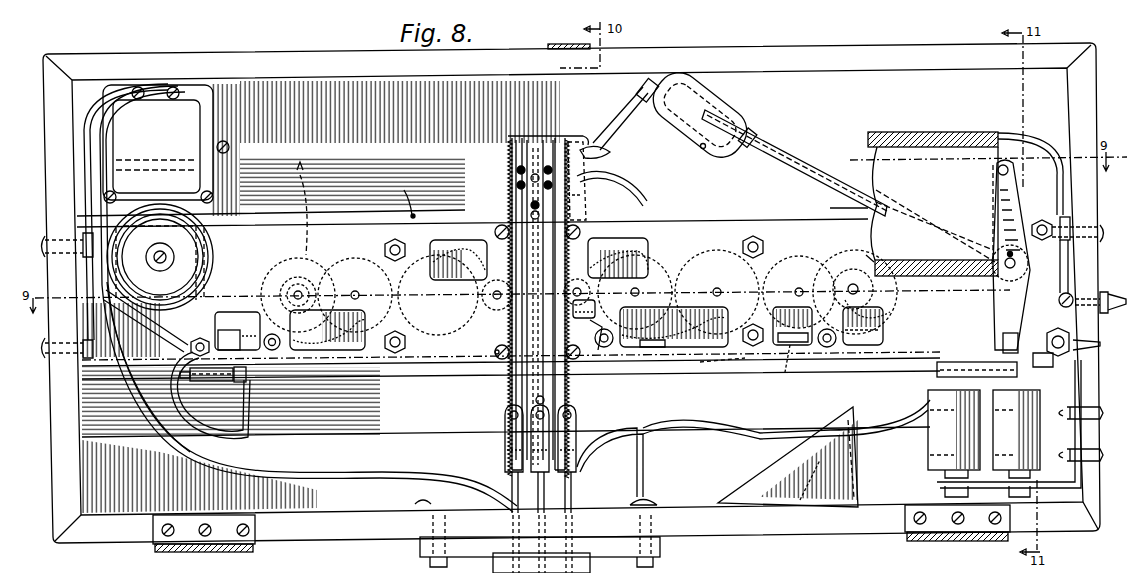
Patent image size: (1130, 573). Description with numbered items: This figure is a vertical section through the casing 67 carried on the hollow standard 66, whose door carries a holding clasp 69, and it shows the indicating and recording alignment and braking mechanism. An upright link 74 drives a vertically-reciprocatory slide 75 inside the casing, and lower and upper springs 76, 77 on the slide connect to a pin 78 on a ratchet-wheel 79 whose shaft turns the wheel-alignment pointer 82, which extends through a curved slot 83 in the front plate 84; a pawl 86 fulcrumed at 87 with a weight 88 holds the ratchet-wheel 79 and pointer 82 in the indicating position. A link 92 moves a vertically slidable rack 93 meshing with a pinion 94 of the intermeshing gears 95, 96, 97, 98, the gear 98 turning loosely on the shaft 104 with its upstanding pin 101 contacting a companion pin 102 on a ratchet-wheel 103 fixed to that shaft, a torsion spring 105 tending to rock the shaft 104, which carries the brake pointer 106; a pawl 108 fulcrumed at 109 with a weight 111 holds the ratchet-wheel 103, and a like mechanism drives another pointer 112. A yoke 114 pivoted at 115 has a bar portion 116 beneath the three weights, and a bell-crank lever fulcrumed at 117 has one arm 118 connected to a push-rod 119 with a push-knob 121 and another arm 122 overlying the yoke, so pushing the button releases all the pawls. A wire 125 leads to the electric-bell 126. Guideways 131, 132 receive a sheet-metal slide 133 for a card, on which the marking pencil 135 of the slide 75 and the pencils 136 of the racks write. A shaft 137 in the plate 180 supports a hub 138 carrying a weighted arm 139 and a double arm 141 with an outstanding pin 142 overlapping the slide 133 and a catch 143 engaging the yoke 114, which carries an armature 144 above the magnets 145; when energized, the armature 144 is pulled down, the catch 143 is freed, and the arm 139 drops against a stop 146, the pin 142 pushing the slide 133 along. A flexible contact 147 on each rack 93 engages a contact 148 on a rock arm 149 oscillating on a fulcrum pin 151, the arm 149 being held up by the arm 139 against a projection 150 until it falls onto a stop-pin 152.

The hollow column or standard 66 is at (592, 564).
The casing 67 is at (1090, 214).
The holding clasp 69 is at (565, 44).
The upright link 74 is at (505, 447).
The vertically-reciprocatory bar or slide 75 is at (532, 385).
The lower spring 76 is at (505, 342).
The upper spring 77 is at (584, 212).
The pin 78 is at (577, 283).
The ratchet-wheel 79 is at (590, 262).
The wheel-alignment pointer or index 82 is at (584, 200).
The curved slot 83 is at (648, 198).
The plate or sheet 84 is at (415, 190).
The pawl 86 is at (596, 365).
The fulcrum 87 is at (612, 350).
The weight 88 is at (790, 345).
The link 92 is at (498, 458).
The vertically slidable rack 93 is at (547, 160).
The pinion 94 is at (360, 301).
The gear 95 is at (452, 240).
The gear 96 is at (363, 250).
The gear 97 is at (792, 262).
The gear 98 is at (306, 278).
The upstanding pin 101 is at (353, 288).
The companion pin 102 is at (330, 290).
The ratchet-wheel 103 is at (262, 260).
The shaft 104 is at (845, 285).
The torsion spring 105 is at (884, 333).
The pointer 106 is at (835, 208).
The pawl 108 is at (848, 345).
The fulcrum 109 is at (827, 350).
The weight 111 is at (788, 360).
The pointer 112 is at (310, 240).
The yoke 114 is at (977, 372).
The pivot 115 is at (250, 430).
The bar portion 116 is at (732, 372).
The fulcrum 117 is at (1062, 378).
The arm 118 is at (1113, 309).
The push-rod 119 is at (1070, 296).
The push-knob or button 121 is at (1104, 292).
The arm 122 is at (1011, 280).
The wire 125 is at (360, 474).
The electric-bell 126 is at (160, 250).
The horizontal guideway 131 is at (952, 132).
The horizontal guideway 132 is at (930, 276).
The sheet-metal slide 133 is at (934, 203).
The marking pencil 135 is at (517, 200).
The pencil 136 is at (527, 160).
The shaft 137 is at (1005, 300).
The hub 138 is at (1000, 240).
The weighted arm 139 is at (812, 177).
The double arm 141 is at (992, 216).
The outstanding pin 142 is at (996, 170).
The catch 143 is at (1000, 347).
The armature 144 is at (937, 370).
The magnet 145 is at (930, 443).
The stop 146 is at (765, 475).
The flexible electric-contact 147 is at (582, 132).
The electric-contact 148 is at (608, 147).
The rock arm 149 is at (628, 120).
The projection 150 is at (645, 78).
The fulcrum pin 151 is at (735, 100).
The stop-pin 152 is at (694, 155).
The supporting plate 180 is at (448, 360).